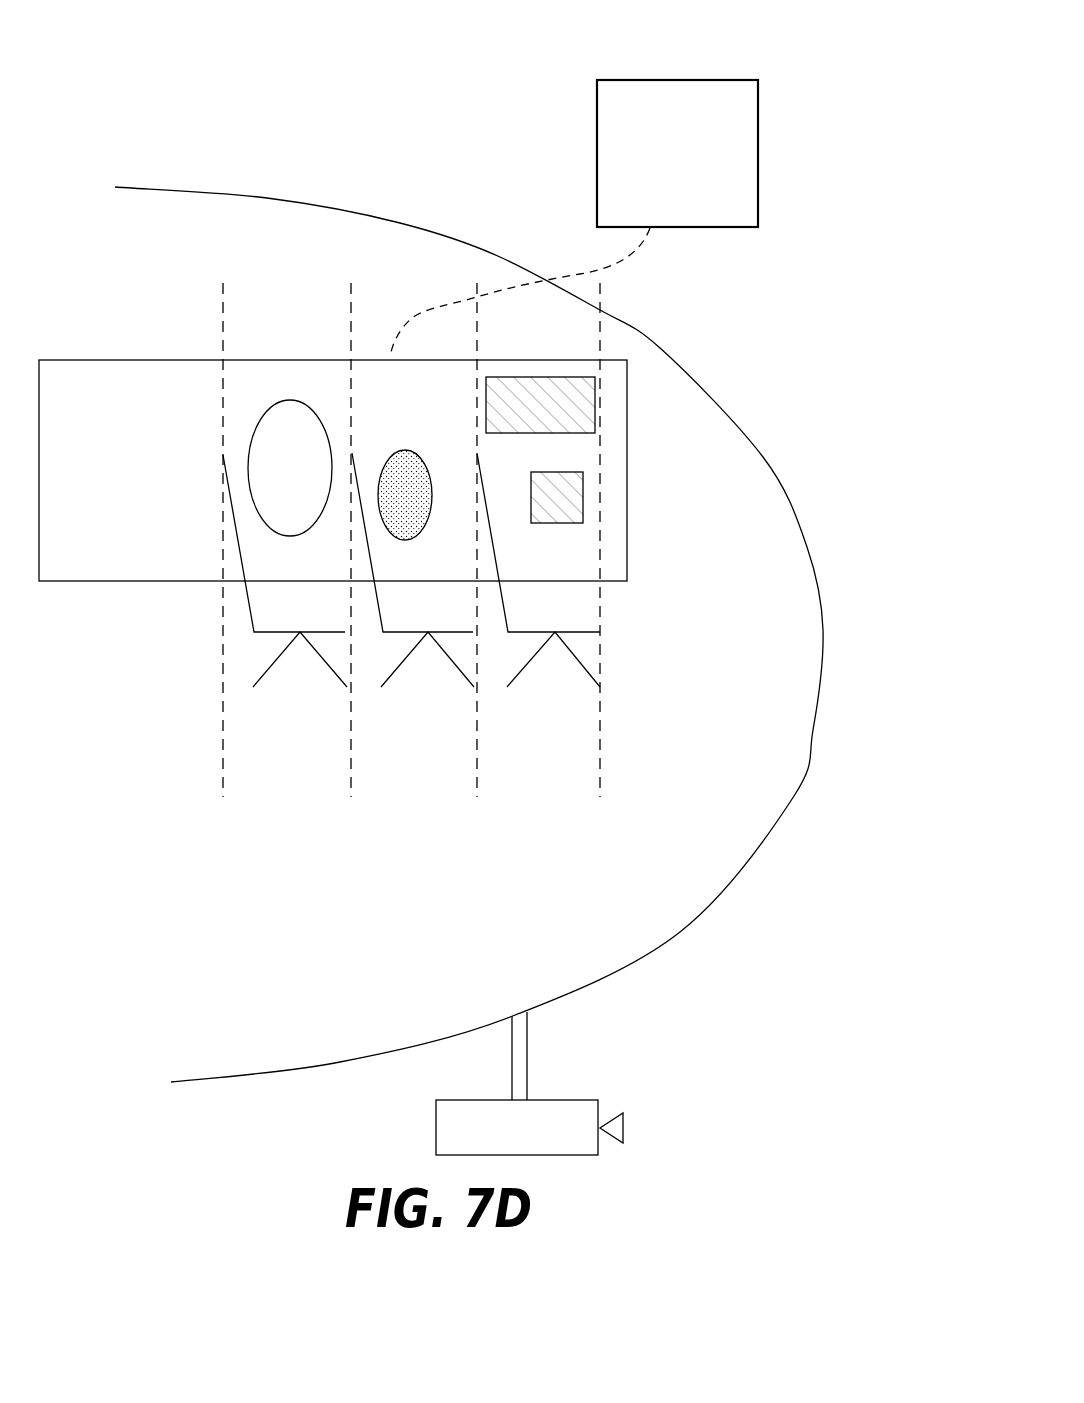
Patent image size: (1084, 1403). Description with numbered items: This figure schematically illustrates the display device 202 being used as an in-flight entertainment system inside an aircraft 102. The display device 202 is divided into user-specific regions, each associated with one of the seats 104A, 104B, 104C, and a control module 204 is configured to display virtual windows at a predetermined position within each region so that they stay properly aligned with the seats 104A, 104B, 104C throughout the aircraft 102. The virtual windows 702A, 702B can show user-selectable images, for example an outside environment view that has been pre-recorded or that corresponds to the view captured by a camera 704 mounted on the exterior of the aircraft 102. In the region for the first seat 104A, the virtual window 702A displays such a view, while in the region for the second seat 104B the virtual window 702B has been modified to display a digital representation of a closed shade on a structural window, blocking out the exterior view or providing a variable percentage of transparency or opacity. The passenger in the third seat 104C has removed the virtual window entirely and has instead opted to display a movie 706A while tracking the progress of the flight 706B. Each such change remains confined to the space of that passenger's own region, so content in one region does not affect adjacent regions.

The aircraft 102 is at (763, 457).
The control module 204 is at (652, 80).
The display device 202 is at (195, 360).
The virtual window 702A is at (334, 388).
The virtual window 702B is at (388, 460).
The movie 706A is at (497, 377).
The progress of the flight 706B is at (538, 523).
The seat 104A is at (247, 598).
The seat 104B is at (380, 613).
The seat 104C is at (505, 613).
The camera 704 is at (436, 1131).